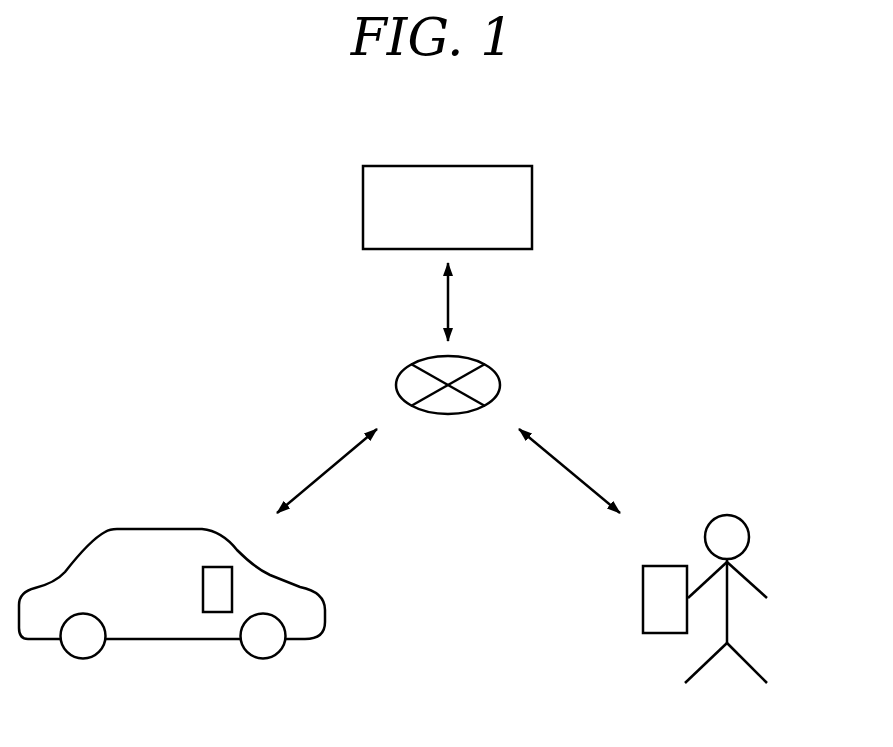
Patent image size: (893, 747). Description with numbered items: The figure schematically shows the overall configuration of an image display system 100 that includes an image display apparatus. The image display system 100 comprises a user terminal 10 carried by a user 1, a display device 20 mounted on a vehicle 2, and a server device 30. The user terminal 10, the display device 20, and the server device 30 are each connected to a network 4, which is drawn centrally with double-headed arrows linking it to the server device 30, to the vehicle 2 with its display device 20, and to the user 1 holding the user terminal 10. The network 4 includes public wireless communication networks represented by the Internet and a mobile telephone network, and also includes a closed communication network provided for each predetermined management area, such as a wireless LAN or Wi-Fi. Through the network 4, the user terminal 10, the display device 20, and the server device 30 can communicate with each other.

The image display system 100 is at (623, 288).
The server device 30 is at (503, 166).
The network 4 is at (492, 367).
The vehicle 2 is at (150, 529).
The display device 20 is at (221, 567).
The user 1 is at (745, 520).
The user terminal 10 is at (643, 592).